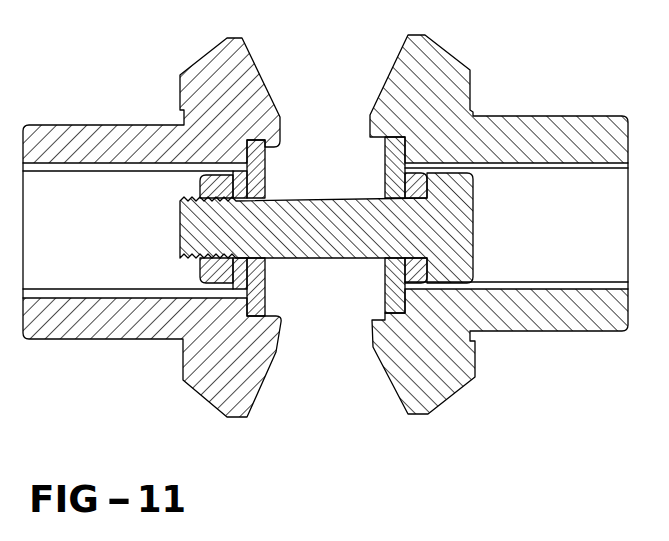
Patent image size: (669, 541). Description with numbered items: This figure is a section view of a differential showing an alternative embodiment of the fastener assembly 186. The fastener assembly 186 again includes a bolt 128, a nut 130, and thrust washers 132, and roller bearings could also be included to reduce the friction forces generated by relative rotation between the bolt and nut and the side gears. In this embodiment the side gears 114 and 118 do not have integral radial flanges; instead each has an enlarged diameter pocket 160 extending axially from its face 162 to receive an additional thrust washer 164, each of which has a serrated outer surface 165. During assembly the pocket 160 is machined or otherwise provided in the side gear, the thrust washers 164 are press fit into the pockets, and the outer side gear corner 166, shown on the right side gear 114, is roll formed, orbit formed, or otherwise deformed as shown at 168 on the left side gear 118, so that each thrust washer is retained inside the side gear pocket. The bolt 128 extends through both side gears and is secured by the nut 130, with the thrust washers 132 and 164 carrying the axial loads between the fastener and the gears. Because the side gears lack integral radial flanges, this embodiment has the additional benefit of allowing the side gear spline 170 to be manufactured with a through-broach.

The side gear 114 is at (440, 46).
The side gear 118 is at (262, 80).
The bolt 128 is at (333, 211).
The nut 130 is at (200, 193).
The thrust washer 132 is at (240, 289).
The pocket 160 is at (372, 147).
The face 162 is at (372, 330).
The thrust washer 164 is at (265, 166).
The serrated outer surface 165 is at (191, 381).
The outer side gear corner 166 is at (385, 313).
The deformed corner 168 is at (277, 308).
The side gear spline 170 is at (534, 166).
The fastener assembly 186 is at (313, 283).